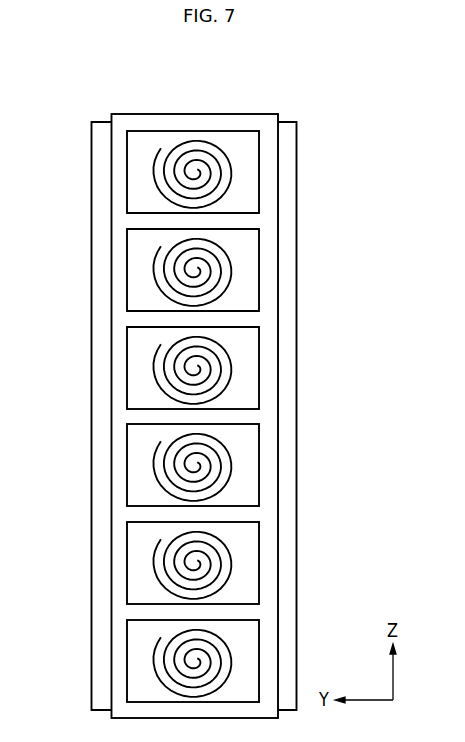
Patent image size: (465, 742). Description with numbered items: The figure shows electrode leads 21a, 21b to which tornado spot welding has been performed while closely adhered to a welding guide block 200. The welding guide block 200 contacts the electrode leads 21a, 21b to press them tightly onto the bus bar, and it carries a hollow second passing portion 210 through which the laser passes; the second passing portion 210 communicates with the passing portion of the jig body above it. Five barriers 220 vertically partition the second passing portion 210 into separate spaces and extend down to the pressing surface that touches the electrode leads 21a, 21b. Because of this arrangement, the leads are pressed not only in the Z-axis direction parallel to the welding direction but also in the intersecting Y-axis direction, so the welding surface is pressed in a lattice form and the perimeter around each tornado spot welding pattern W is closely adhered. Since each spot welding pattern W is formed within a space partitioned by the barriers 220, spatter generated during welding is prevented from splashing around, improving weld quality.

The welding guide block 200 is at (240, 113).
The electrode lead 21a is at (322, 159).
The electrode lead 21b is at (66, 160).
The second passing portion 210 is at (313, 197).
The barrier 220 is at (143, 221).
The spot welding pattern W is at (313, 268).